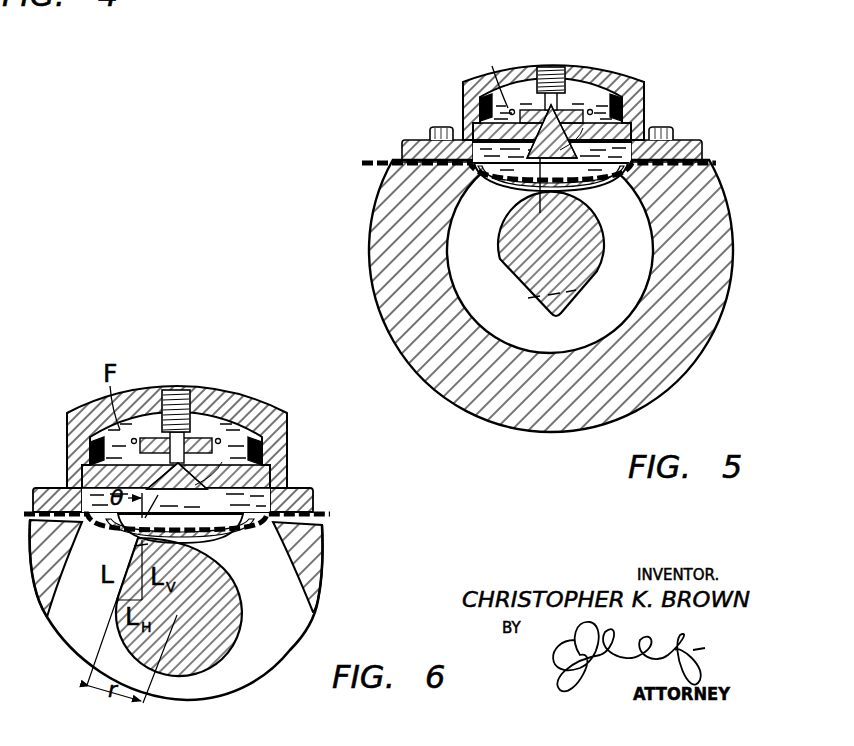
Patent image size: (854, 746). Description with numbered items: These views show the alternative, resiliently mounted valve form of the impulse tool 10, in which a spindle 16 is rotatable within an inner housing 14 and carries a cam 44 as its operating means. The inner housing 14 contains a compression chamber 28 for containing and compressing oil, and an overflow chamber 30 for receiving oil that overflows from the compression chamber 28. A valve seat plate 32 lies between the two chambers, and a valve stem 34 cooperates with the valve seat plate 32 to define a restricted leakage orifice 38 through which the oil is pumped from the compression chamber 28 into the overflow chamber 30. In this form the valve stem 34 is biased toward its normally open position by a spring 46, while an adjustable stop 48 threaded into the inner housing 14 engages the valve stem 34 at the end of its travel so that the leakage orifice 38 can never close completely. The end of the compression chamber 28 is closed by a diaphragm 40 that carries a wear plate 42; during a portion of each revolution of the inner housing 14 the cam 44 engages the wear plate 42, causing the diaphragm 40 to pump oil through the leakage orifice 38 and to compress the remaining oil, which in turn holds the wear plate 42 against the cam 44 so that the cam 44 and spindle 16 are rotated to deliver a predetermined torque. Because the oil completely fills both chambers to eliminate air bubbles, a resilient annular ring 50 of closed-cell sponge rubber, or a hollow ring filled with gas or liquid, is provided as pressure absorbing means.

In FIG. 5, the impulse tool 10 is at (717, 82).
In FIG. 5, the inner housing 14 is at (640, 101).
In FIG. 6, the inner housing 14 is at (283, 438).
In FIG. 5, the spindle 16 is at (588, 247).
In FIG. 6, the spindle 16 is at (205, 652).
In FIG. 5, the compression chamber 28 is at (509, 183).
In FIG. 5, the overflow chamber 30 is at (589, 94).
In FIG. 5, the valve seat plate 32 is at (480, 133).
In FIG. 6, the valve seat plate 32 is at (268, 478).
In FIG. 5, the valve stem 34 is at (551, 108).
In FIG. 6, the valve stem 34 is at (178, 430).
In FIG. 5, the leakage orifice 38 is at (572, 139).
In FIG. 6, the leakage orifice 38 is at (166, 502).
In FIG. 5, the diaphragm 40 is at (390, 163).
In FIG. 6, the diaphragm 40 is at (323, 514).
In FIG. 5, the wear plate 42 is at (506, 208).
In FIG. 6, the wear plate 42 is at (212, 541).
In FIG. 5, the cam 44 is at (557, 304).
In FIG. 6, the cam 44 is at (136, 540).
In FIG. 5, the spring 46 is at (534, 100).
In FIG. 6, the spring 46 is at (157, 432).
In FIG. 5, the adjustable stop 48 is at (566, 67).
In FIG. 6, the adjustable stop 48 is at (196, 418).
In FIG. 5, the resilient annular ring 50 is at (483, 106).
In FIG. 6, the resilient annular ring 50 is at (100, 420).